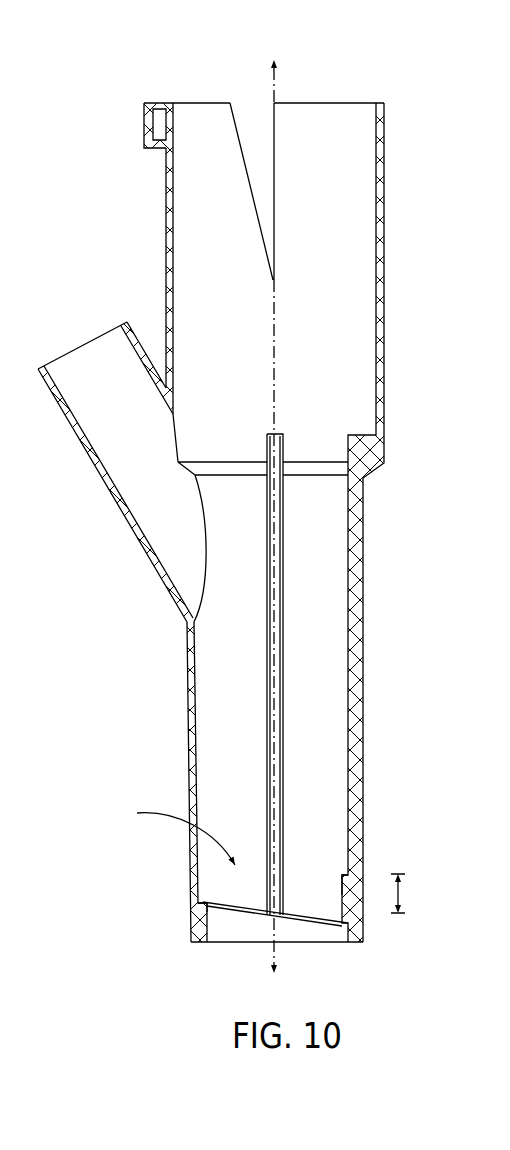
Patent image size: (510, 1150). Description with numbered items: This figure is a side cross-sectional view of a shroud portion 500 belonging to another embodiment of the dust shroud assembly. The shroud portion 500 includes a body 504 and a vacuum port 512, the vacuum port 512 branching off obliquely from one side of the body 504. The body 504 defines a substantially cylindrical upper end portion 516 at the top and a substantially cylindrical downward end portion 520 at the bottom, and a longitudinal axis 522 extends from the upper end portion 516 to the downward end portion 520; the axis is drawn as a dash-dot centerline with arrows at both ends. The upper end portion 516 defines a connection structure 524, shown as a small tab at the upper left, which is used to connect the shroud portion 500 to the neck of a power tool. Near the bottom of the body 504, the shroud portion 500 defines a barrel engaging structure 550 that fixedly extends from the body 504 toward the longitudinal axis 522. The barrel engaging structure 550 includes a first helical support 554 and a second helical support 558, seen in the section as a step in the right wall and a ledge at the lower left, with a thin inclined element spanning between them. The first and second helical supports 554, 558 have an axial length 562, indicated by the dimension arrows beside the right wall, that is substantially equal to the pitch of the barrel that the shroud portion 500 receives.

The shroud portion 500 is at (62, 103).
The upper end portion 516 is at (190, 102).
The longitudinal axis 522 is at (274, 92).
The connection structure 524 is at (145, 162).
The vacuum port 512 is at (57, 405).
The body 504 is at (363, 593).
The first helical support 554 is at (343, 892).
The axial length 562 is at (400, 893).
The barrel engaging structure 550 is at (163, 834).
The second helical support 558 is at (223, 925).
The downward end portion 520 is at (325, 944).